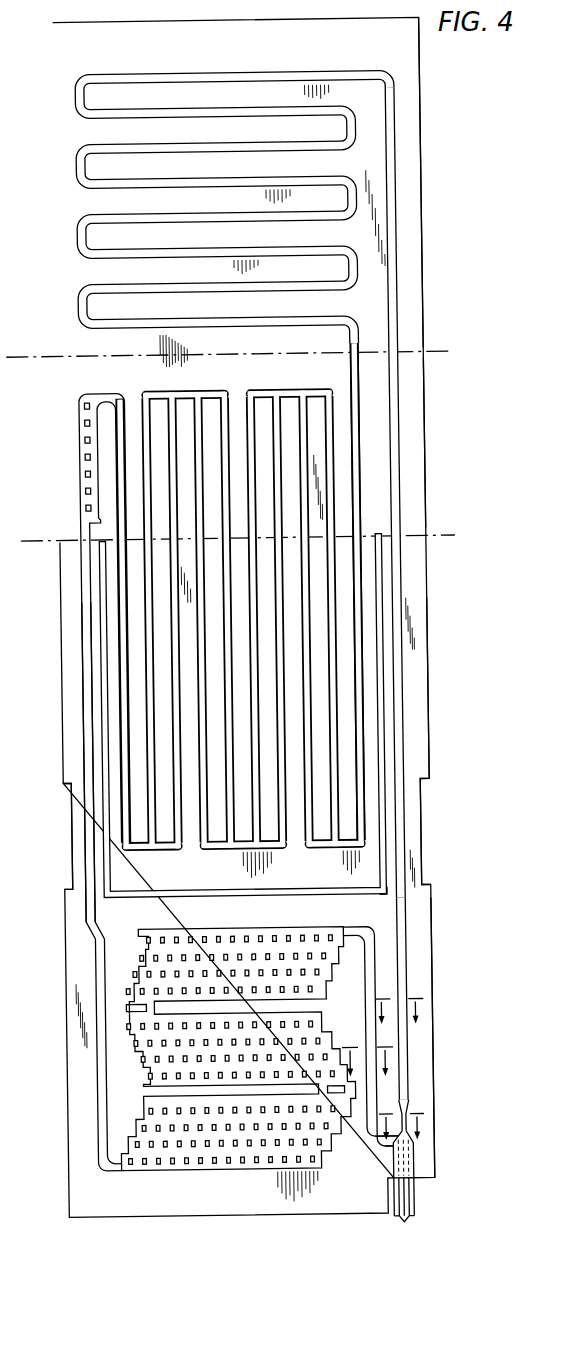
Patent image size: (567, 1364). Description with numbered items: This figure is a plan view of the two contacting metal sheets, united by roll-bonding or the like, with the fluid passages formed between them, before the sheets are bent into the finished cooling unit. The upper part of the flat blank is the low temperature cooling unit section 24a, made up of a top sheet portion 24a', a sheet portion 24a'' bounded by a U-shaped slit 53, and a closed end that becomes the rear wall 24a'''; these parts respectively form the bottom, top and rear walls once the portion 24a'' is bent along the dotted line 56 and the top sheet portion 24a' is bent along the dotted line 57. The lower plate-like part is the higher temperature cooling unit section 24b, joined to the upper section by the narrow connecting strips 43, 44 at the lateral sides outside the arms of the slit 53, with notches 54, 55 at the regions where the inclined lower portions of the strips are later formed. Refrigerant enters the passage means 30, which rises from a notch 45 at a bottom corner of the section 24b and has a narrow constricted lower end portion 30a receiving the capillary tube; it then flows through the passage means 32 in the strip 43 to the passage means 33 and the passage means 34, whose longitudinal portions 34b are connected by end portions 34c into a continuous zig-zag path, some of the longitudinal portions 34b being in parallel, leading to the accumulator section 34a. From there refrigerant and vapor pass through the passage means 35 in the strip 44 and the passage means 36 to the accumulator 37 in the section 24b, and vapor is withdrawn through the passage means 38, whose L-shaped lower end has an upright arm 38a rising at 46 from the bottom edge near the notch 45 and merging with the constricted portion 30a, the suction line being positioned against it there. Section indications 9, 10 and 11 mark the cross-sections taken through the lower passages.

The section line 9- 9 is at (399, 1002).
The section line 10- 10 is at (369, 1053).
The section line 11- 11 is at (404, 1117).
The low temperature cooling unit section 24a is at (287, 616).
The top sheet portion 24a' is at (442, 182).
The sheet portion 24a'' is at (294, 713).
The rear wall 24a''' is at (460, 441).
The higher temperature cooling unit section 24b is at (436, 1037).
The passage means 30 is at (404, 962).
The constricted lower end portion 30a is at (392, 1104).
The passage means 32 is at (403, 456).
The passage means 33 is at (403, 153).
The passage means 34 is at (362, 417).
The accumulator section 34a is at (83, 455).
The longitudinal portions 34b is at (247, 408).
The end portions 34c is at (172, 392).
The passage means 35 is at (84, 704).
The passage means 36 is at (90, 977).
The accumulator 37 is at (140, 935).
The passage means 38 is at (376, 1152).
The upright arm 38a is at (405, 1150).
The connecting strip 43 is at (428, 740).
The connecting strip 44 is at (60, 643).
The notch 45 is at (408, 1195).
The lower end location of upright arm 46 is at (415, 1180).
The U-shaped slit 53 is at (392, 895).
The notch 54 is at (420, 812).
The notch 55 is at (67, 832).
The dotted line 56 is at (440, 542).
The dotted line 57 is at (455, 352).